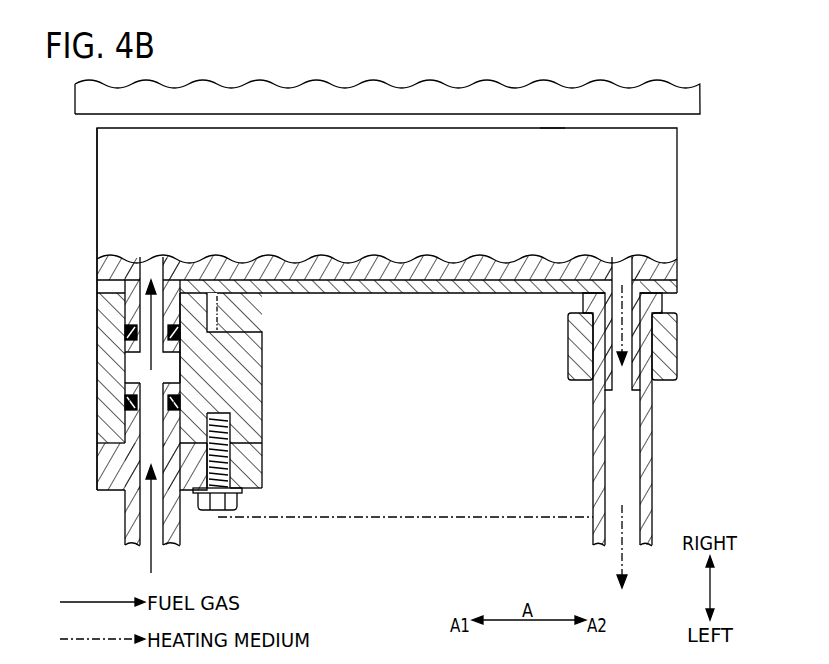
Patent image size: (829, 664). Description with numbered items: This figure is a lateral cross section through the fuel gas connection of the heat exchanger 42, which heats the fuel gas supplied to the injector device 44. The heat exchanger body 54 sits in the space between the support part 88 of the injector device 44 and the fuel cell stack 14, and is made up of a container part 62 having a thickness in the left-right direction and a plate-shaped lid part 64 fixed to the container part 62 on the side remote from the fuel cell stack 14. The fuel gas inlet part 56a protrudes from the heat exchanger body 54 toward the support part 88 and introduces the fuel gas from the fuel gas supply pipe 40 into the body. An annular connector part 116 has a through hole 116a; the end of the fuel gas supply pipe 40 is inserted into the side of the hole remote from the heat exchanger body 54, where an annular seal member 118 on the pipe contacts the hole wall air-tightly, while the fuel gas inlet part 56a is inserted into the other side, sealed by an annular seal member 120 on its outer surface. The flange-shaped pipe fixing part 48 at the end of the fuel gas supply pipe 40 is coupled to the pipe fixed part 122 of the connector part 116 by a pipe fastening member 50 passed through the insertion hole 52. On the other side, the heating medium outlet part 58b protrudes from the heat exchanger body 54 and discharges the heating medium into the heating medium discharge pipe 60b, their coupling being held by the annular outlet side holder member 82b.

The fuel cell stack 14 is at (87, 106).
The heat exchanger 42 is at (554, 116).
The heat exchanger body 54 is at (684, 146).
The container part 62 is at (103, 222).
The lid part 64 is at (107, 287).
The fuel gas inlet part 56a is at (135, 318).
The annular seal member 120 is at (128, 331).
The connector part 116 is at (110, 363).
The through hole 116a is at (137, 372).
The pipe fixed part 122 is at (248, 362).
The annular seal member 118 is at (178, 402).
The fuel gas supply pipe 40 is at (130, 515).
The injector device 44 is at (127, 474).
The support part 88 is at (80, 443).
The insertion hole 52 is at (205, 463).
The pipe fixing part 48 is at (255, 458).
The pipe fastening member 50 is at (214, 510).
The heating medium outlet part 58b is at (645, 392).
The heating medium discharge pipe 60b is at (652, 438).
The outlet side holder member 82b is at (672, 341).